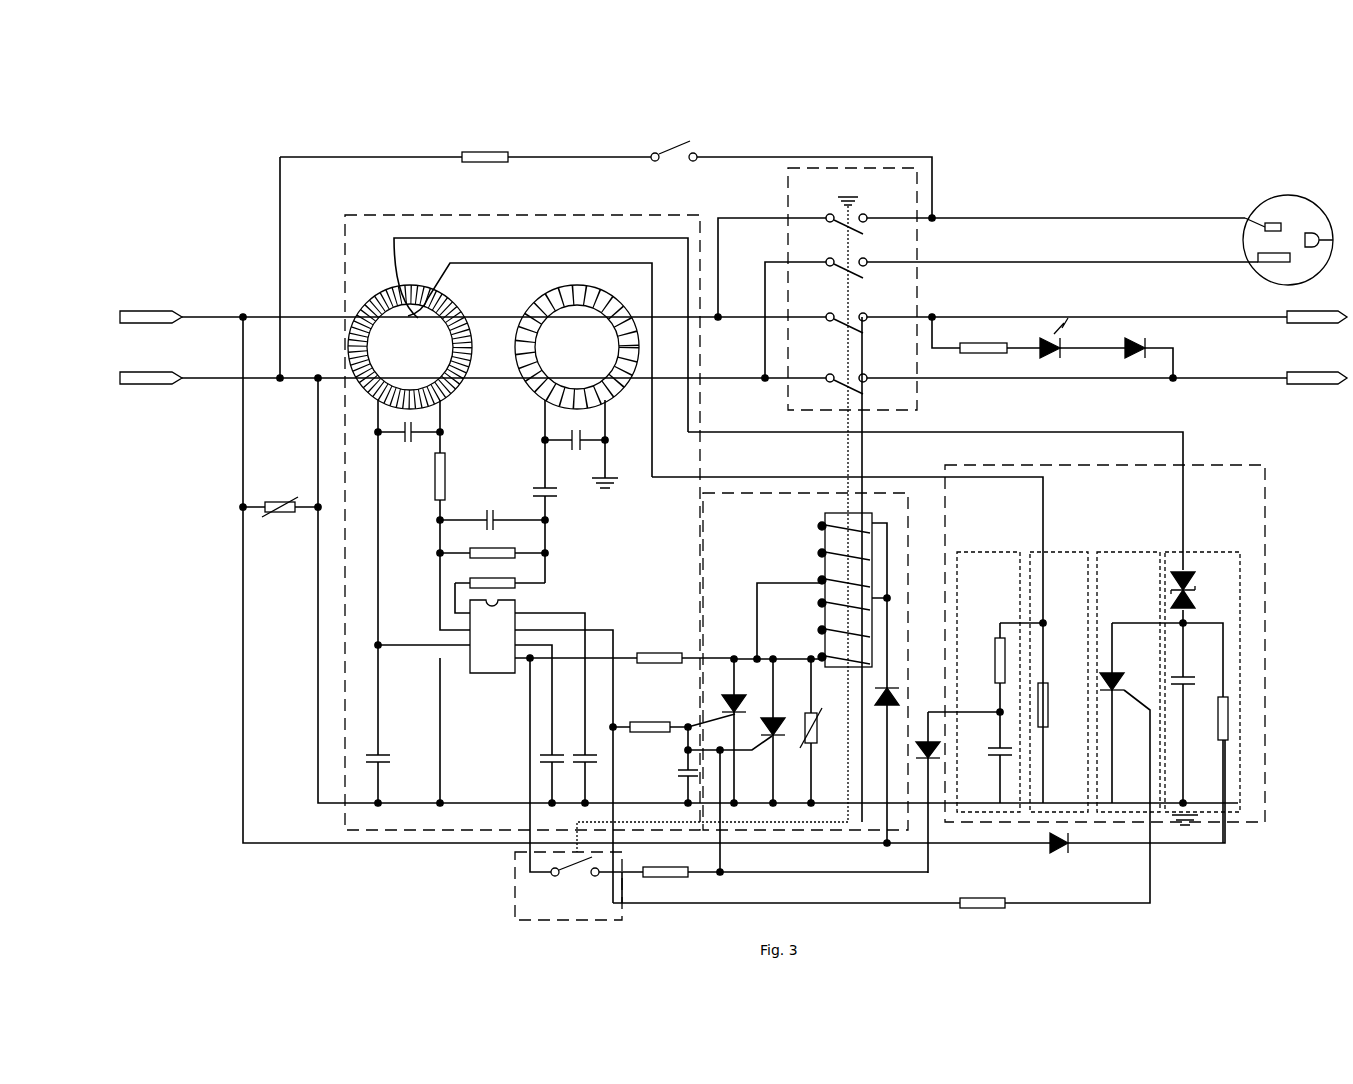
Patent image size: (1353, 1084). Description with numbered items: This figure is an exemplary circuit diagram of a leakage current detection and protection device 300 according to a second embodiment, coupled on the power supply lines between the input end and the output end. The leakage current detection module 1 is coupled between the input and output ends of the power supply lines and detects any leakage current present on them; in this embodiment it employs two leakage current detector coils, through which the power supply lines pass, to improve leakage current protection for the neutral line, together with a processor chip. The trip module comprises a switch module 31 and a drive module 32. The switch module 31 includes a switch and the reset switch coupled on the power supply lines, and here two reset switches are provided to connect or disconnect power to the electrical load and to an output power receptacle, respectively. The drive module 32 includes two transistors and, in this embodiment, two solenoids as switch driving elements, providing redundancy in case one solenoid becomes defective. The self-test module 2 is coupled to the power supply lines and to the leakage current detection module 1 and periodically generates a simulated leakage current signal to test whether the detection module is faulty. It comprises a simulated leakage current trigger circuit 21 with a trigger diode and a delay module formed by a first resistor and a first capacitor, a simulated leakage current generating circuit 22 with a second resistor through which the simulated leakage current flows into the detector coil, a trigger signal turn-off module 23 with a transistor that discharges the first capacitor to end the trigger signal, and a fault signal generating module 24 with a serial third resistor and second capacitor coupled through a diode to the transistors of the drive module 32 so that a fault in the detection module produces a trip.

The leakage current detection and protection device 300 is at (1326, 69).
The leakage current detection module 1 is at (567, 215).
The switch module 31 is at (860, 168).
The drive module 32 is at (790, 493).
The self-test module 2 is at (1237, 465).
The simulated leakage current trigger circuit 21 is at (1205, 552).
The simulated leakage current generating circuit 22 is at (1062, 552).
The trigger signal turn-off module 23 is at (1118, 552).
The fault signal generating module 24 is at (987, 552).